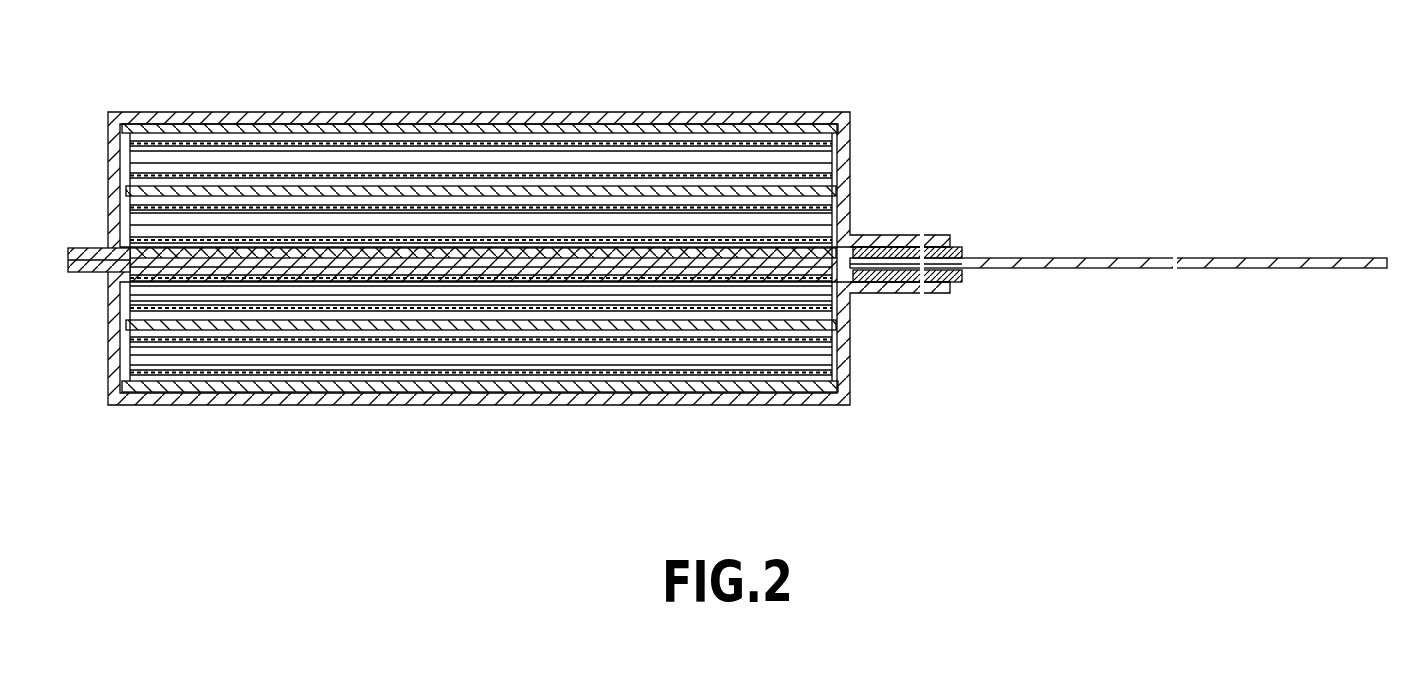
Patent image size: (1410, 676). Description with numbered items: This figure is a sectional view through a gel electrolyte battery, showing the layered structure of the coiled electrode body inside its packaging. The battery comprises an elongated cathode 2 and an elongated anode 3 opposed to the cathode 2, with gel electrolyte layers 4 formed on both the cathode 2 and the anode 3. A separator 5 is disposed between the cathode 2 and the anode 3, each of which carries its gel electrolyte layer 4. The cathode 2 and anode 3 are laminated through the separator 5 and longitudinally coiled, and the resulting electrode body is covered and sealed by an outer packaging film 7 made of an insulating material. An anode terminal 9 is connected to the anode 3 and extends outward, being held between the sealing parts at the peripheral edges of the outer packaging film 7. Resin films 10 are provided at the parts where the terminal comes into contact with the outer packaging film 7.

The cathode 2 is at (298, 163).
The anode 3 is at (445, 132).
The gel electrolyte layer 4 is at (368, 140).
The separator 5 is at (563, 132).
The outer packaging film 7 is at (745, 112).
The anode terminal 9 is at (1220, 258).
The resin film 10 is at (960, 248).